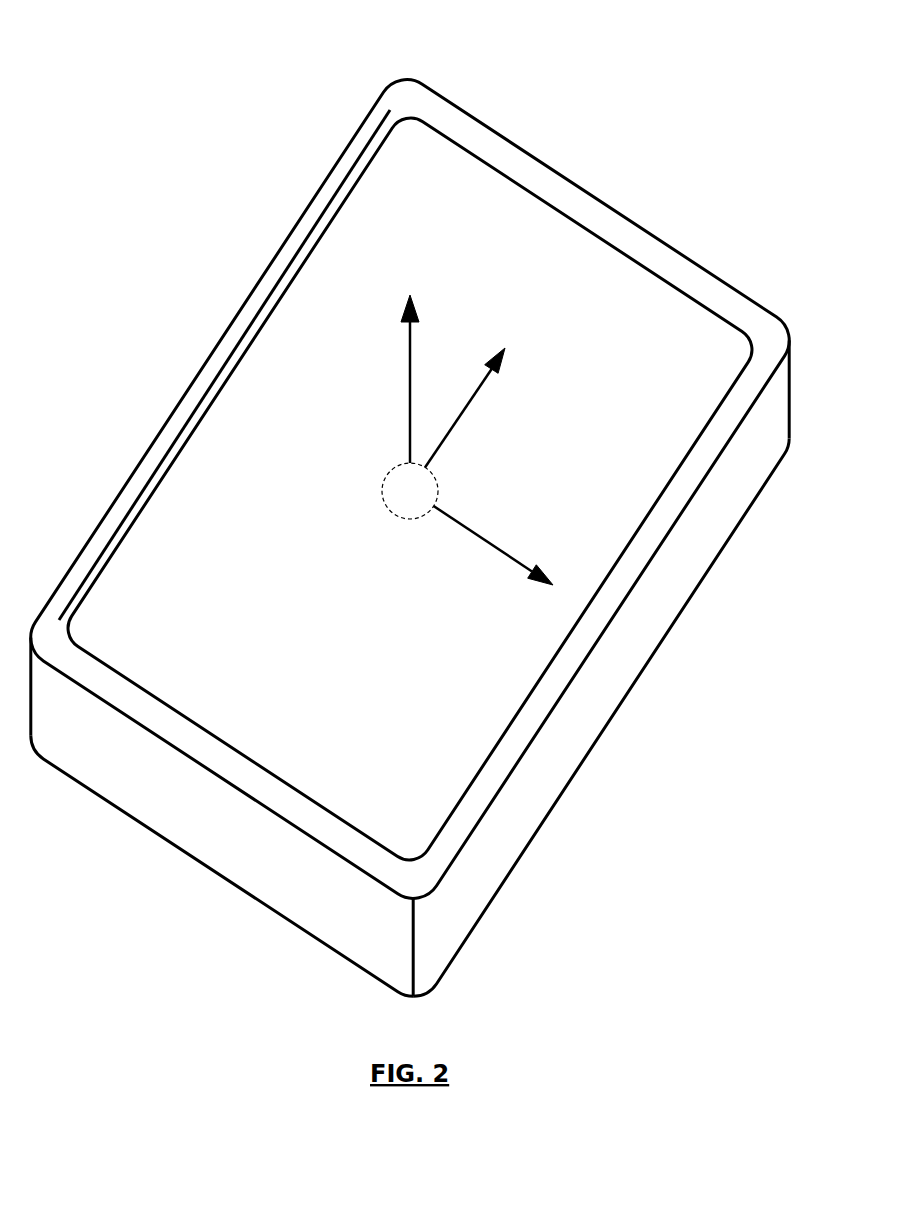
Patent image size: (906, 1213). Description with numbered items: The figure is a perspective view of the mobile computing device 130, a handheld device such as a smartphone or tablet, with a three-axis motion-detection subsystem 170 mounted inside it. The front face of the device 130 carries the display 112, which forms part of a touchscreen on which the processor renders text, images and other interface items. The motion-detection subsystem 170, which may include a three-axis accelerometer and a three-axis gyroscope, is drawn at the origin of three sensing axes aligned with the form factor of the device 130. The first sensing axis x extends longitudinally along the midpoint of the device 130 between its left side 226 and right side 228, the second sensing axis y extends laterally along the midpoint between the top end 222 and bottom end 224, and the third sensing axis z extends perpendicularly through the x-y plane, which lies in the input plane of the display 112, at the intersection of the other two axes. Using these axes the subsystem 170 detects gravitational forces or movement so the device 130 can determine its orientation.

The mobile computing device 130 is at (309, 32).
The display 112 is at (289, 285).
The top end 222 is at (500, 135).
The bottom end 224 is at (157, 736).
The left side 226 is at (200, 372).
The right side 228 is at (672, 625).
The motion-detection subsystem 170 is at (382, 490).